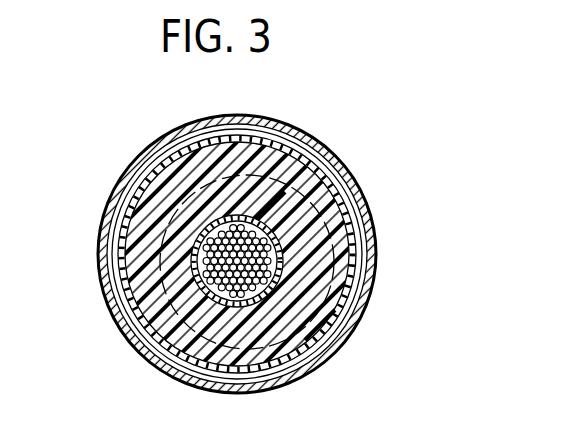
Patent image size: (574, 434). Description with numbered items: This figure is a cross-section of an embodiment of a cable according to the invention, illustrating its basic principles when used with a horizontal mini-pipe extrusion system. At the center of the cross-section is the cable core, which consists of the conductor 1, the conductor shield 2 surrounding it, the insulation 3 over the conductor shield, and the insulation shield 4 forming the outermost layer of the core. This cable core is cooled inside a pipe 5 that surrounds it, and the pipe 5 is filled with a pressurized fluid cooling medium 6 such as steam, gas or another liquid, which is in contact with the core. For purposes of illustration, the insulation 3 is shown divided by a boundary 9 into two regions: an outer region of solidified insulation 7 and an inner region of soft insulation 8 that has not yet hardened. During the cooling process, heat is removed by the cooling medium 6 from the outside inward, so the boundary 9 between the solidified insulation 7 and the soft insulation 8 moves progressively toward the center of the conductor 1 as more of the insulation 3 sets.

The conductor 1 is at (277, 232).
The conductor shield 2 is at (268, 265).
The insulation 3 is at (322, 322).
The insulation shield 4 is at (157, 176).
The pipe 5 is at (100, 260).
The pressurized fluid cooling medium 6 is at (190, 143).
The solidified insulation 7 is at (146, 307).
The soft insulation 8 is at (270, 207).
The boundary 9 is at (240, 349).